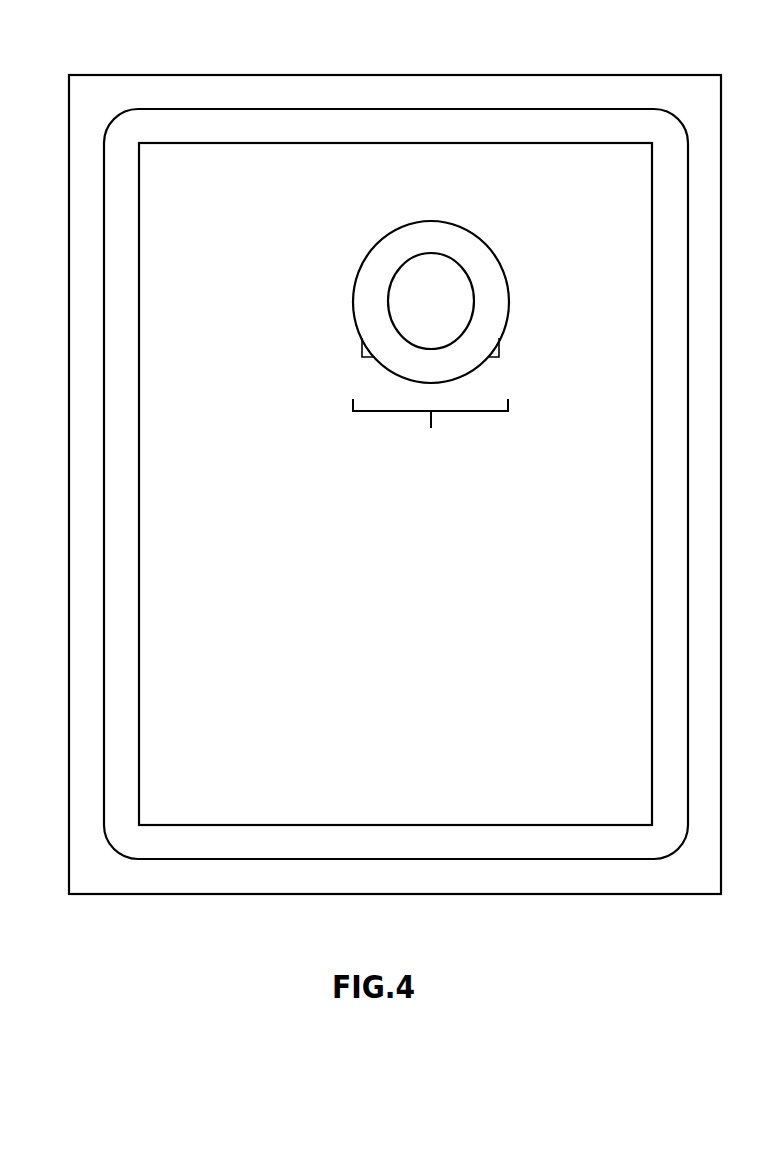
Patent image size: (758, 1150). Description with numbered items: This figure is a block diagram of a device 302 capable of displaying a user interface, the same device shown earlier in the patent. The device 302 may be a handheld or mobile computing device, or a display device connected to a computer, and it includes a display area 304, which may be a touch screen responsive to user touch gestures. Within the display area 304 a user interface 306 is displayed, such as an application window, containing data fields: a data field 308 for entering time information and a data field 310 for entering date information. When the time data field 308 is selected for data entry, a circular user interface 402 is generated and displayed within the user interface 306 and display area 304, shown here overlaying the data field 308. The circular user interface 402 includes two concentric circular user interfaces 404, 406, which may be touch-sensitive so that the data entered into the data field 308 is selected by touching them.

The device 302 is at (132, 74).
The display area 304 is at (122, 263).
The user interface 306 is at (268, 195).
The data field 308 is at (268, 263).
The data field 310 is at (268, 331).
The circular user interface 402 is at (430, 398).
The concentric circular user interface 404 is at (453, 297).
The concentric circular user interface 406 is at (465, 248).